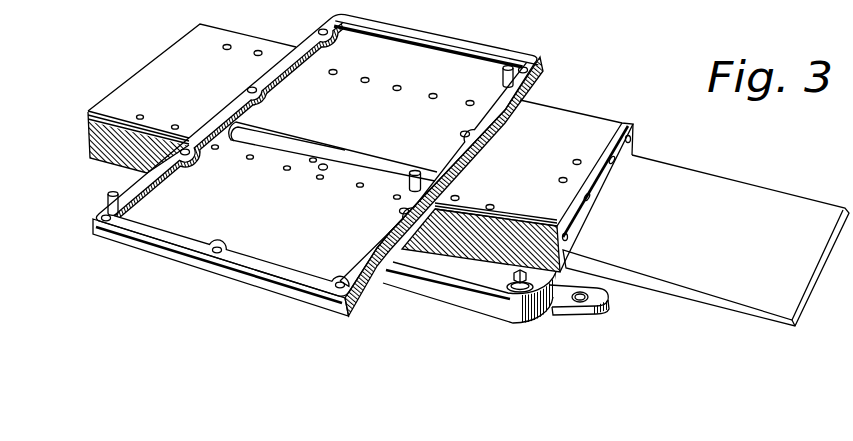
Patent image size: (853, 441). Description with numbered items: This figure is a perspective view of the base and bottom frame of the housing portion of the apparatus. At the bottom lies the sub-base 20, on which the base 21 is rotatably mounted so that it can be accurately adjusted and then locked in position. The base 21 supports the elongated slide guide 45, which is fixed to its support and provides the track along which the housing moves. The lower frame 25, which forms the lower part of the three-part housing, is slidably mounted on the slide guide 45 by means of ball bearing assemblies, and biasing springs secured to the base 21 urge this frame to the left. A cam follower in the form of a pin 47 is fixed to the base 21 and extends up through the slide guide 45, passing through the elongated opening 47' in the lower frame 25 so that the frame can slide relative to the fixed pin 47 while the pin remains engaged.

The sub-base 20 is at (560, 311).
The base 21 is at (458, 267).
The lower frame 25 is at (258, 283).
The slide guide 45 is at (350, 170).
The pin 47 is at (310, 141).
The elongated opening 47' is at (333, 138).